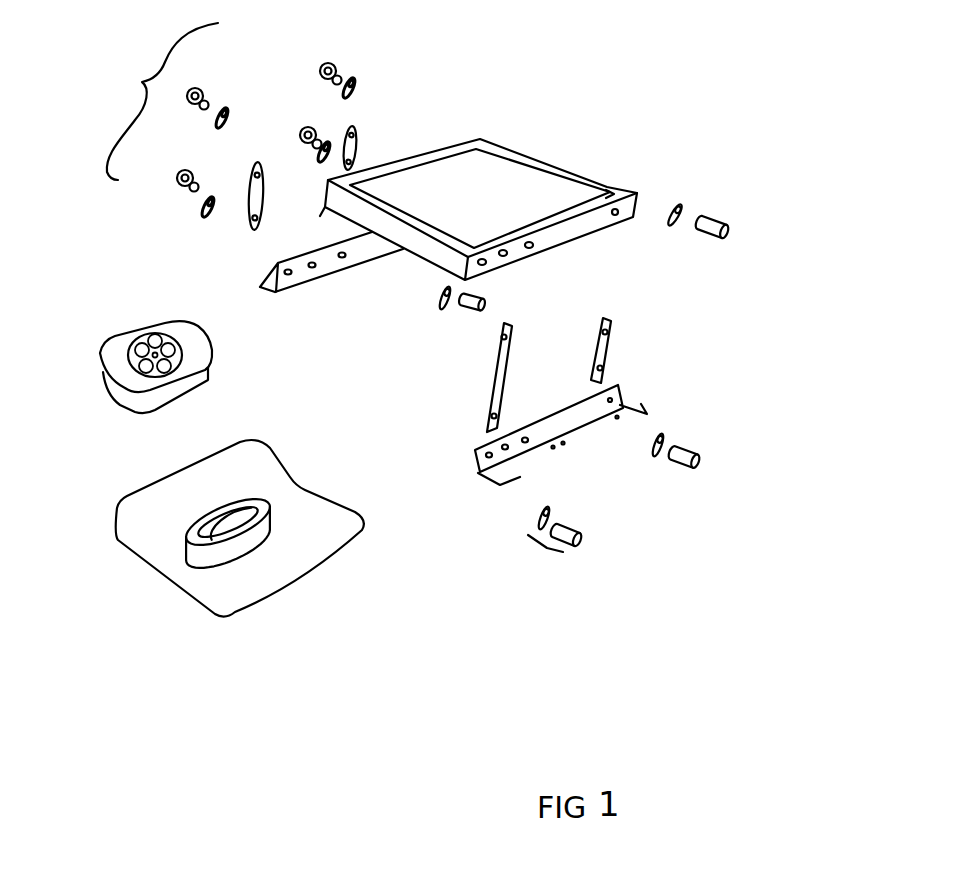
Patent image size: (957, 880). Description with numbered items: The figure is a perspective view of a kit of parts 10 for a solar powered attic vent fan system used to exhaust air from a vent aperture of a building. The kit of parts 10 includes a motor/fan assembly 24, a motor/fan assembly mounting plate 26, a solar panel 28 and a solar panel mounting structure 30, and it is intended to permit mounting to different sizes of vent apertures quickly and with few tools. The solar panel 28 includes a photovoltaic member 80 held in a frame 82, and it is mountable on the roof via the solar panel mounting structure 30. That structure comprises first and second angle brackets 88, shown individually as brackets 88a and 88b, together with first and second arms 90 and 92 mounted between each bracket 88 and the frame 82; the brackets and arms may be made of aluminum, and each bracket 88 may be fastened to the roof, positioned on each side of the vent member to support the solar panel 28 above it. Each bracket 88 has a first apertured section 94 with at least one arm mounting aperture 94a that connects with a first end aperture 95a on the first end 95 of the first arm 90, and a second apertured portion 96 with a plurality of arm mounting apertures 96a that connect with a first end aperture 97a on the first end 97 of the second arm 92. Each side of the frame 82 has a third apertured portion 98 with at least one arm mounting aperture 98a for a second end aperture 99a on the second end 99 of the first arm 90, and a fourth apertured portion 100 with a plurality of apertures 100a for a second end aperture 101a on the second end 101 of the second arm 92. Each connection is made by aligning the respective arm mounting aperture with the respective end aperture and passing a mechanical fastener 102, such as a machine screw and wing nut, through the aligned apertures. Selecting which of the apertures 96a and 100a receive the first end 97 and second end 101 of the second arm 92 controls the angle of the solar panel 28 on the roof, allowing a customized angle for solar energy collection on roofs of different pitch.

The kit of parts 10 is at (875, 124).
The motor/fan assembly 24 is at (103, 390).
The motor/fan assembly mounting plate 26 is at (157, 585).
The solar panel 28 is at (513, 189).
The solar panel mounting structure 30 is at (155, 101).
The photovoltaic member 80 is at (452, 178).
The frame 82 is at (413, 250).
The angle brackets 88 is at (543, 432).
The first angle bracket 88a is at (558, 450).
The second angle bracket 88b is at (289, 293).
The first arm 90 is at (357, 140).
The second arm 92 is at (247, 205).
The first apertured section 94 is at (617, 390).
The arm mounting aperture 94a is at (618, 397).
The first end 95 is at (605, 370).
The first end aperture 95a is at (605, 362).
The second apertured portion 96 is at (478, 454).
The arm mounting apertures 96a is at (505, 451).
The first end 97 is at (447, 403).
The first end aperture 97a is at (488, 421).
The third apertured portion 98 is at (637, 197).
The arm mounting aperture 98a is at (614, 196).
The second end 99 is at (608, 323).
The second end aperture 99a is at (607, 333).
The fourth apertured portion 100 is at (535, 244).
The apertures 100a is at (534, 250).
The second end 101 is at (502, 330).
The second end aperture 101a is at (498, 350).
The mechanical fastener 102 is at (205, 95).